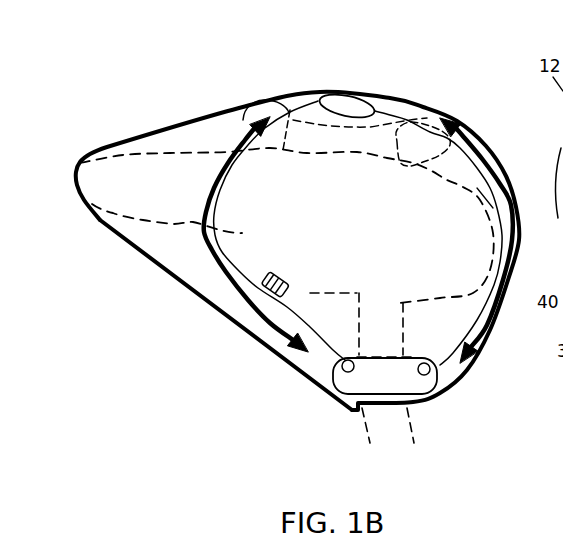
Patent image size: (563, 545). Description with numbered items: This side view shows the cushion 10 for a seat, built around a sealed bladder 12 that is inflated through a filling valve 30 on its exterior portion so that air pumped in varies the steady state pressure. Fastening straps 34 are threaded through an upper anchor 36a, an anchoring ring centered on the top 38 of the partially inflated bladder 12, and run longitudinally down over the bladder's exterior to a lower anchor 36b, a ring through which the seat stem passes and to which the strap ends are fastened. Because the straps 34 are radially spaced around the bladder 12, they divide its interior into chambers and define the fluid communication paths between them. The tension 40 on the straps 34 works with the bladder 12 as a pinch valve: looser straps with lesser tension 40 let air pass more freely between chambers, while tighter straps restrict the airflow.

The cushion 10 is at (138, 104).
The sealed bladder 12 is at (260, 103).
The filling valve 30 is at (258, 282).
The straps 34 is at (497, 194).
The upper anchor 36a is at (358, 96).
The lower anchor 36b is at (434, 393).
The top 38 is at (370, 127).
The tension 40 is at (478, 137).